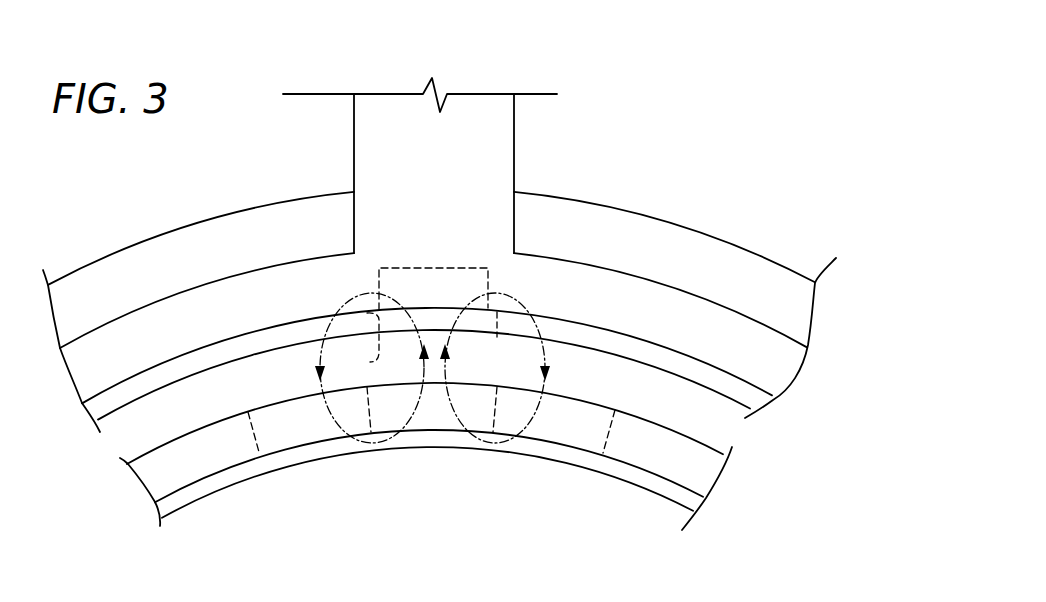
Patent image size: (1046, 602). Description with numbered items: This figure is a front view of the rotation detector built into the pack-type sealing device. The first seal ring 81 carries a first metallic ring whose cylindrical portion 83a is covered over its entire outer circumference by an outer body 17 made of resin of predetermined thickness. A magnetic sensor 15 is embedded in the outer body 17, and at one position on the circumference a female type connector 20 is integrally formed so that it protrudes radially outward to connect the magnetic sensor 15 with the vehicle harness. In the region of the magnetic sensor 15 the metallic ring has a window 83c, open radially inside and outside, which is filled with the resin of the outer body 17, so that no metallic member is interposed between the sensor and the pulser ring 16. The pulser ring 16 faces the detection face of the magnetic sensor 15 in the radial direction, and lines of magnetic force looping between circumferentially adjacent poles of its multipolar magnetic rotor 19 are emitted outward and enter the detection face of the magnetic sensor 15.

The female type connector 20 is at (494, 138).
The first seal ring 81 is at (439, 255).
The outer body 17 is at (745, 266).
The magnetic sensor 15 is at (418, 260).
The cylindrical portion 83a is at (177, 367).
The window 83c is at (377, 362).
The multipolar magnetic rotor 19 is at (707, 472).
The pulser ring 16 is at (452, 461).